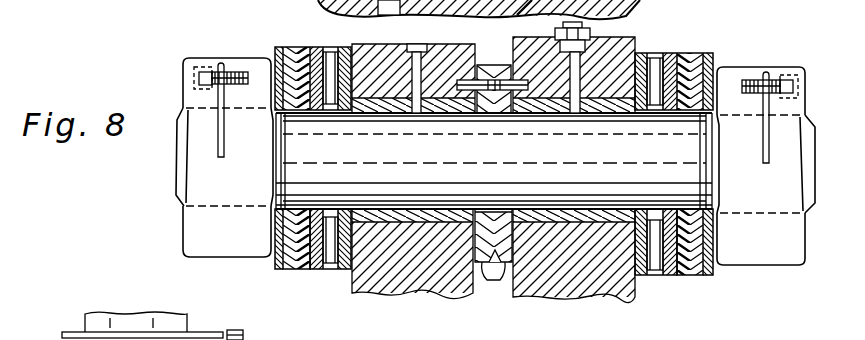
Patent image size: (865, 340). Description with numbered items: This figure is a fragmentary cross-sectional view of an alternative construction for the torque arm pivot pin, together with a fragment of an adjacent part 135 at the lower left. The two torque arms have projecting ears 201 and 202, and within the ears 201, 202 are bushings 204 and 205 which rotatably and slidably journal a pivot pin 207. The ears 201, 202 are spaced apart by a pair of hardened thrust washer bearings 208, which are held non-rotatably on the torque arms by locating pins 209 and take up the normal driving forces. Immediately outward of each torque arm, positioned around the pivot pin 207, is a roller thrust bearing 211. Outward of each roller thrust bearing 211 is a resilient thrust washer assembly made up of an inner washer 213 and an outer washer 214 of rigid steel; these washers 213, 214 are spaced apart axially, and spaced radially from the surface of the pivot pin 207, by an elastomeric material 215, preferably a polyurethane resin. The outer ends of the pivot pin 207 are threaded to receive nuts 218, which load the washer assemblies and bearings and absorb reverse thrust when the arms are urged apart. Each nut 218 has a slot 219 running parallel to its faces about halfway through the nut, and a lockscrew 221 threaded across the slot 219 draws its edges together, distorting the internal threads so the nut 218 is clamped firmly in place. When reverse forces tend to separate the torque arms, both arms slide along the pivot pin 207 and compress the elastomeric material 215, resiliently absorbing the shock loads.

The base plate 135 is at (199, 338).
The projecting ear 201 is at (423, 294).
The projecting ear 202 is at (596, 297).
The bushing 204 is at (466, 168).
The bushing 205 is at (580, 211).
The pivot pin 207 is at (503, 164).
The hardened thrust washer bearing 208 is at (497, 281).
The locating pin 209 is at (503, 80).
The roller thrust bearing 211 is at (323, 47).
The inner washer 213 is at (303, 270).
The outer washer 214 is at (275, 268).
The elastomeric material 215 is at (292, 270).
The nut 218 is at (197, 238).
The slot 219 is at (221, 62).
The lockscrew 221 is at (182, 78).